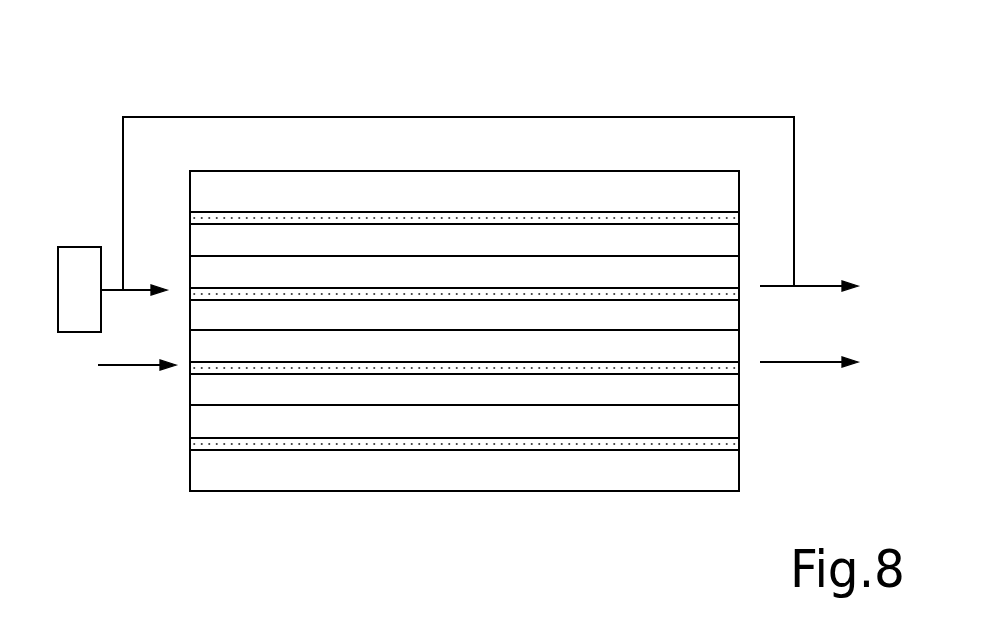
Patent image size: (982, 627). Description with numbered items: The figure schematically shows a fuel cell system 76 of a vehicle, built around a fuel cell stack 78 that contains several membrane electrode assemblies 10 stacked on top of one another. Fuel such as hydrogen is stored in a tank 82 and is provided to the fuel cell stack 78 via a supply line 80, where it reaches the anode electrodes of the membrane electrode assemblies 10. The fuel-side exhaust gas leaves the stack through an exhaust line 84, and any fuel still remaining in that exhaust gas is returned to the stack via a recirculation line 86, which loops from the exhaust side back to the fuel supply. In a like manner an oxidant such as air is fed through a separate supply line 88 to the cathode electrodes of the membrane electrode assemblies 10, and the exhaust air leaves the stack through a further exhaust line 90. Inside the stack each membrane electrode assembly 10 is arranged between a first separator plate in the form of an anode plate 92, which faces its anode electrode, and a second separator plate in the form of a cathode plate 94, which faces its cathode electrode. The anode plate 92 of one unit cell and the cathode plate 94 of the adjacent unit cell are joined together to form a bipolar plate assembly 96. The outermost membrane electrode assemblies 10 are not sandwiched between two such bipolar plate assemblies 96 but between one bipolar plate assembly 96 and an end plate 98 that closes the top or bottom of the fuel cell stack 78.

The membrane electrode assembly 10 is at (542, 215).
The fuel cell system 76 is at (104, 92).
The fuel cell stack 78 is at (241, 159).
The supply line 80 is at (132, 292).
The tank 82 is at (73, 257).
The exhaust line 84 is at (832, 284).
The recirculation line 86 is at (597, 116).
The supply line 88 is at (155, 367).
The further exhaust line 90 is at (832, 358).
The anode plate 92 is at (447, 235).
The cathode plate 94 is at (502, 275).
The bipolar plate assembly 96 is at (402, 227).
The end plate 98 is at (706, 182).